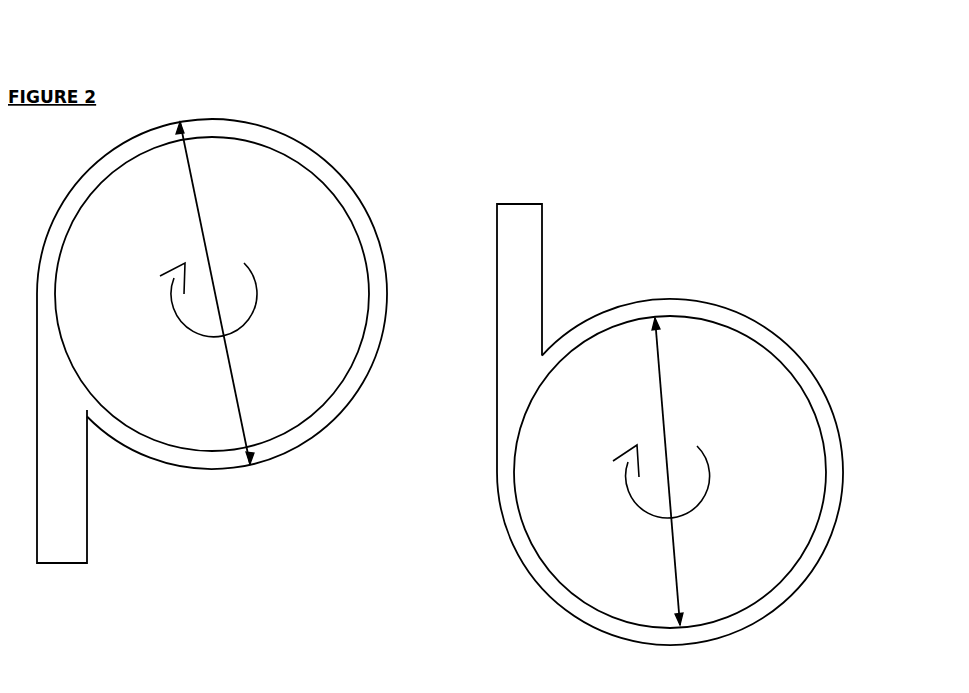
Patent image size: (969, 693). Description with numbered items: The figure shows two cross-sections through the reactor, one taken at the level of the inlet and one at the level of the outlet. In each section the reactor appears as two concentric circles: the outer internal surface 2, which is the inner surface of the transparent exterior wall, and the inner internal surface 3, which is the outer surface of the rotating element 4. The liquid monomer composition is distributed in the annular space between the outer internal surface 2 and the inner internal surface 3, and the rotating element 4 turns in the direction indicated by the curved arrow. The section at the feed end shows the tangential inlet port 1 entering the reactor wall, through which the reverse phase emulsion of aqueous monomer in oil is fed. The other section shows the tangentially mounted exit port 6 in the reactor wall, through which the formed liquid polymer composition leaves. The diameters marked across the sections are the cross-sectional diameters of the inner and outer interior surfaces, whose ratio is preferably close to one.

The tangential inlet port 1 is at (527, 260).
The outer internal surface 2 is at (228, 466).
The inner internal surface 3 is at (368, 268).
The rotating element 4 is at (243, 212).
The tangentially mounted exit port 6 is at (67, 527).